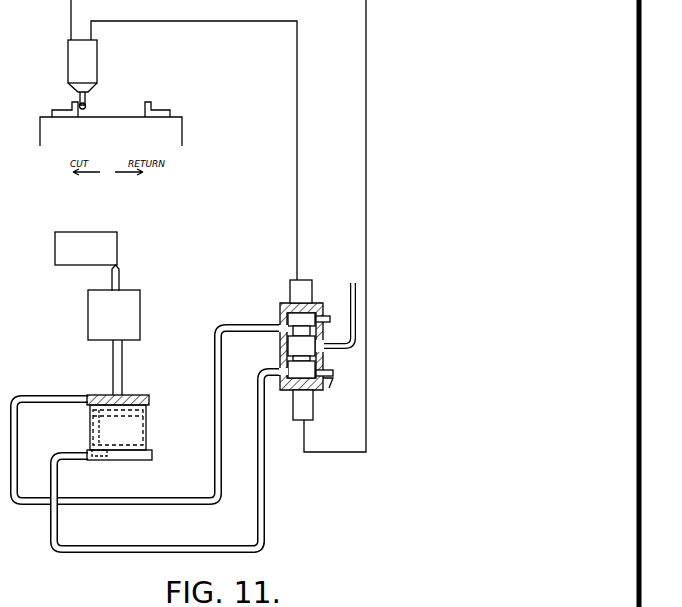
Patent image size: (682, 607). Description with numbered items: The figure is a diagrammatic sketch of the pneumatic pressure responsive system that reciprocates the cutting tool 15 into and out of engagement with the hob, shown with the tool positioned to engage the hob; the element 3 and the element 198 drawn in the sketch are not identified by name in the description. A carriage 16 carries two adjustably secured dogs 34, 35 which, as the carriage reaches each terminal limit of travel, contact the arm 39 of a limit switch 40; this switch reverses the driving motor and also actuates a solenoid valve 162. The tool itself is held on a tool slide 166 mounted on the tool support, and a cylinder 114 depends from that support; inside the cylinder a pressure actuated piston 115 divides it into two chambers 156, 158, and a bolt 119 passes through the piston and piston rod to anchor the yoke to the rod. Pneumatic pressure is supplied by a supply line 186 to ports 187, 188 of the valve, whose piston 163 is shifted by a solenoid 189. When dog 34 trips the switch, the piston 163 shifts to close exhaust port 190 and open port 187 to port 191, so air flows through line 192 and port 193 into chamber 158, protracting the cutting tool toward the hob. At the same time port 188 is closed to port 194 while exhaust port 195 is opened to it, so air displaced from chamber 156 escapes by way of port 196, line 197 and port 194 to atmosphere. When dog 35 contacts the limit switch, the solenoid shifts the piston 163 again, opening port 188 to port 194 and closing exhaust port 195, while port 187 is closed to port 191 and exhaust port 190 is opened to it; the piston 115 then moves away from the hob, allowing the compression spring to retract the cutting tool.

The motor 3 is at (108, 235).
The cutting tool 15 is at (120, 270).
The carriage 16 is at (8, 70).
The dog 34 is at (54, 103).
The dog 35 is at (150, 100).
The arm 39 is at (88, 97).
The limit switch 40 is at (97, 62).
The cylinder 114 is at (88, 426).
The piston 115 is at (145, 411).
The bolt 119 is at (121, 366).
The chamber 156 is at (150, 396).
The chamber 158 is at (150, 440).
The solenoid valve 162 is at (320, 305).
The piston 163 is at (292, 347).
The tool slide 166 is at (138, 312).
The supply line 186 is at (357, 284).
The port 187 is at (334, 366).
The port 188 is at (327, 333).
The solenoid 189 is at (290, 288).
The exhaust port 190 is at (330, 384).
The port 191 is at (280, 375).
The line 192 is at (208, 547).
The port 193 is at (105, 446).
The port 194 is at (280, 326).
The exhaust port 195 is at (331, 313).
The port 196 is at (103, 425).
The line 197 is at (165, 501).
The valve stem end 198 is at (300, 421).